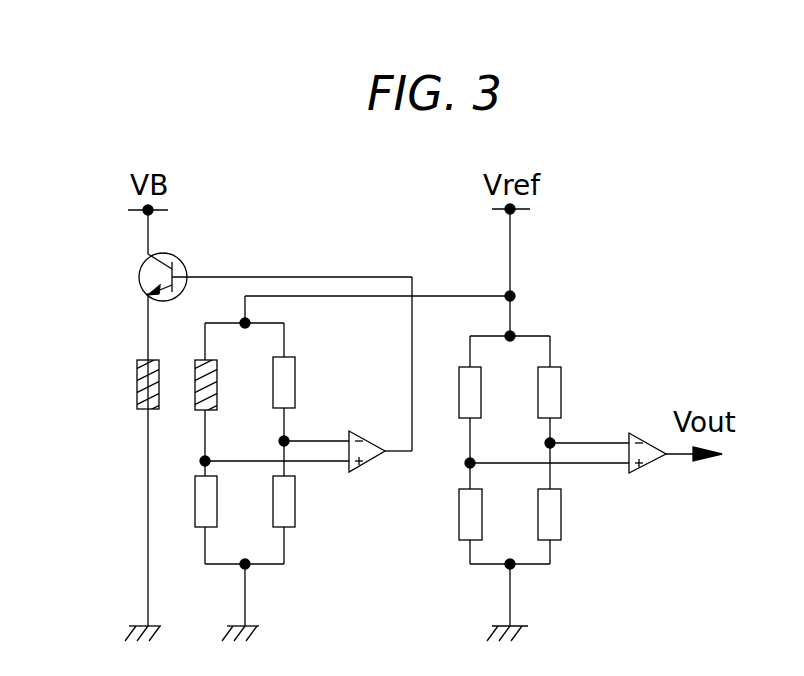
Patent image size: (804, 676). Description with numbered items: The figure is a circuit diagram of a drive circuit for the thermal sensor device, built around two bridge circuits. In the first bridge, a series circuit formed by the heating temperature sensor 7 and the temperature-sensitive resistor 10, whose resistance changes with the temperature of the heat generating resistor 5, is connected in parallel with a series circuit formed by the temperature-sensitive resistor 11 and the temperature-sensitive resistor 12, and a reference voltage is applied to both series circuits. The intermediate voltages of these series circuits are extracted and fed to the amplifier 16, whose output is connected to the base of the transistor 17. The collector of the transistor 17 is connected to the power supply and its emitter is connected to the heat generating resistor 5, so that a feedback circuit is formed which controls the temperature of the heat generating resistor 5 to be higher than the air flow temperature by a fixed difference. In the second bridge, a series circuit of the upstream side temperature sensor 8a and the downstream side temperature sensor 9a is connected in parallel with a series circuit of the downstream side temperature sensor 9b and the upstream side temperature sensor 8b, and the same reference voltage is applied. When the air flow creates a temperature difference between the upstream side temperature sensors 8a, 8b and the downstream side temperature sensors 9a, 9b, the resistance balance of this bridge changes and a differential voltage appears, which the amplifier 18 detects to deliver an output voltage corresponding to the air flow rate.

The heat generating resistor 5 is at (140, 380).
The heating temperature sensor 7 is at (208, 390).
The upstream side temperature sensor 8a is at (467, 385).
The upstream side temperature sensor 8b is at (552, 515).
The downstream side temperature sensor 9a is at (458, 515).
The downstream side temperature sensor 9b is at (552, 395).
The temperature-sensitive resistor 10 is at (202, 502).
The temperature-sensitive resistor 11 is at (287, 385).
The temperature-sensitive resistor 12 is at (285, 498).
The amplifier 16 is at (365, 458).
The transistor 17 is at (177, 266).
The amplifier 18 is at (648, 462).